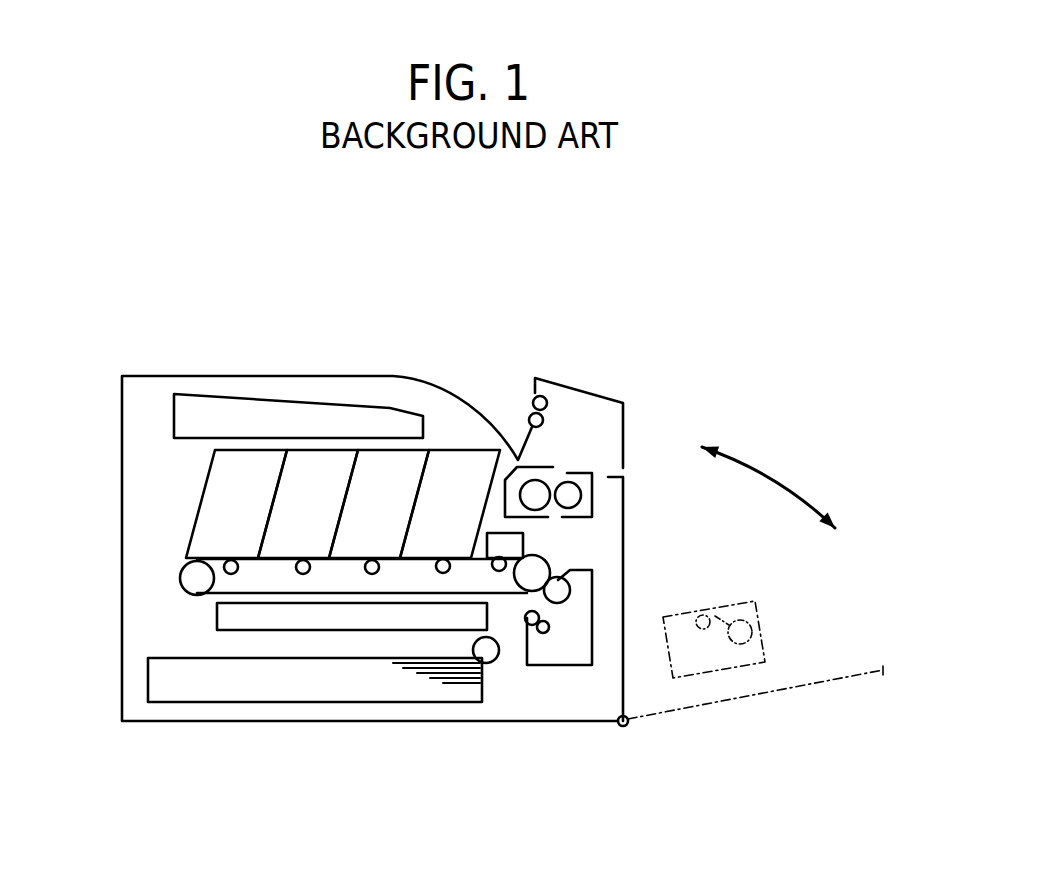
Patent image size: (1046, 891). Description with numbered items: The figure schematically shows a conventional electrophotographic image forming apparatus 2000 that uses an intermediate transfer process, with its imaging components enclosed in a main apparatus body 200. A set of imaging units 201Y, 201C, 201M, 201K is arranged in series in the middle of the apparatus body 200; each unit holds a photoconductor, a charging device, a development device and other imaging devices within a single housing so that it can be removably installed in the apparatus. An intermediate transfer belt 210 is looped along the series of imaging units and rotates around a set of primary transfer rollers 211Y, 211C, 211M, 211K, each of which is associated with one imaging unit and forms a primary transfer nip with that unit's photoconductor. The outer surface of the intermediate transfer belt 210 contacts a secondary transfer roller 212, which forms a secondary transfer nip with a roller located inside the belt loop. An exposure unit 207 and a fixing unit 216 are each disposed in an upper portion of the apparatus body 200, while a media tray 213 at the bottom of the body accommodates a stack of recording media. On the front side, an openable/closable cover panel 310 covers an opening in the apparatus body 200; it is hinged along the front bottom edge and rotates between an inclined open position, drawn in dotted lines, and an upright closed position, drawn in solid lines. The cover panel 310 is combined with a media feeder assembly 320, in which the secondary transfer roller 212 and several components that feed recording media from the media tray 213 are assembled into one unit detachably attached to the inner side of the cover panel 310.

The image forming apparatus 2000 is at (632, 304).
The apparatus body 200 is at (121, 534).
The exposure unit 207 is at (272, 395).
The imaging unit 201K is at (240, 448).
The imaging unit 201M is at (330, 448).
The imaging unit 201C is at (398, 448).
The imaging unit 201Y is at (462, 448).
The intermediate transfer belt 210 is at (213, 596).
The primary transfer roller 211K is at (231, 574).
The primary transfer roller 211M is at (303, 574).
The primary transfer roller 211C is at (372, 574).
The primary transfer roller 211Y is at (443, 573).
The media tray 213 is at (335, 702).
The fixing unit 216 is at (578, 466).
The secondary transfer roller 212 is at (560, 603).
The cover panel 310 is at (624, 553).
The media feeder assembly 320 is at (537, 678).